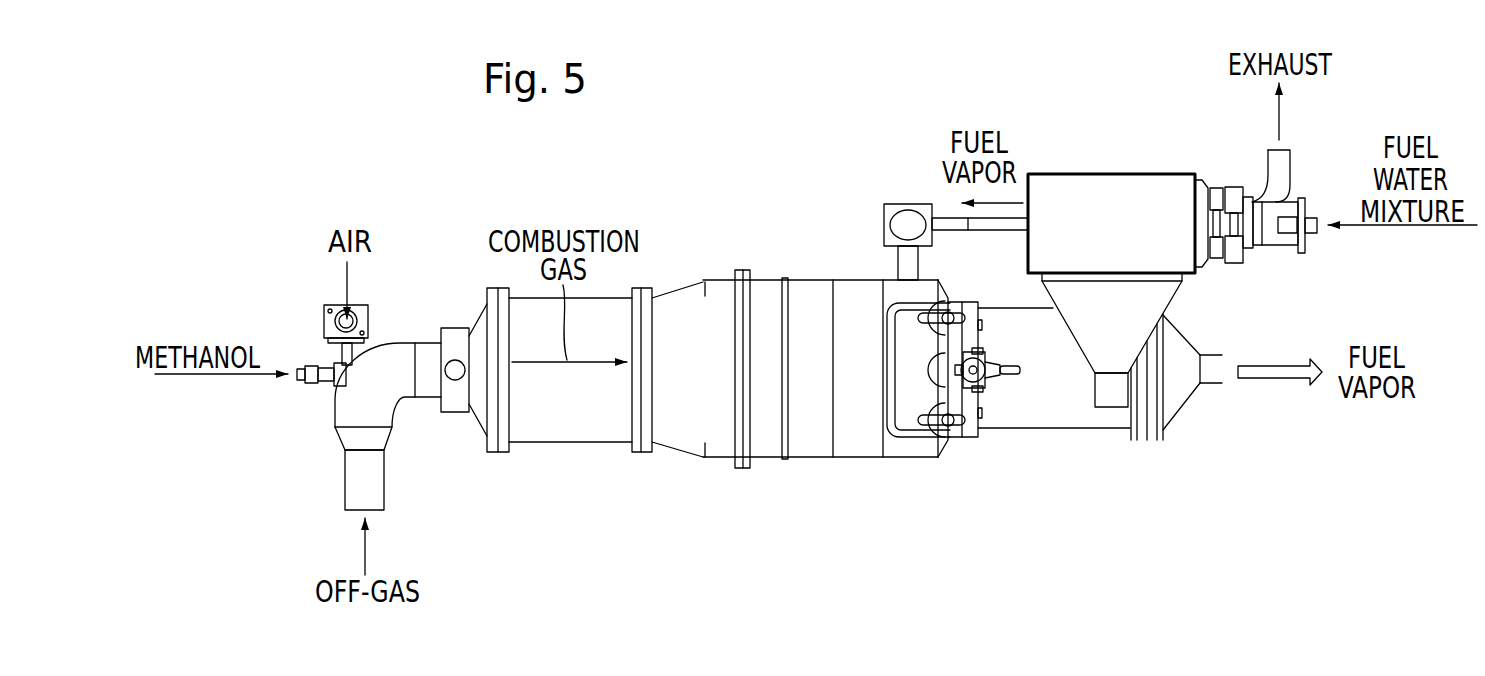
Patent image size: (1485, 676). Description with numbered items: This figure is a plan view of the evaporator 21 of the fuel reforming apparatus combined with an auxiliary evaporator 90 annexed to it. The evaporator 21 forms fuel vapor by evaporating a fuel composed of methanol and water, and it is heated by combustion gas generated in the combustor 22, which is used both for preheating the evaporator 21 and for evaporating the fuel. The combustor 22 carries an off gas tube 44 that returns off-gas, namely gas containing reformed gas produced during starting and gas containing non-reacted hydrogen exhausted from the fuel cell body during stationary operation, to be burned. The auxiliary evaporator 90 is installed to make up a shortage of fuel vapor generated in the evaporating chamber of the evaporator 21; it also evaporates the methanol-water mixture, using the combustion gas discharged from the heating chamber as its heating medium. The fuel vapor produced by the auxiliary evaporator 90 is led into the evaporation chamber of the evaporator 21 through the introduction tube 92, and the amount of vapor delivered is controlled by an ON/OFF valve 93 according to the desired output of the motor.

The evaporator 21 is at (963, 490).
The combustor 22 is at (575, 457).
The off gas tube 44 is at (385, 482).
The auxiliary evaporator 90 is at (1098, 174).
The introduction tube 92 is at (947, 232).
The ON/OFF valve 93 is at (884, 225).